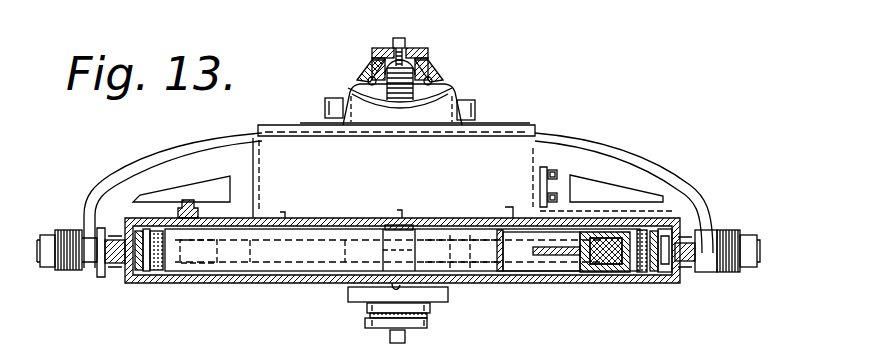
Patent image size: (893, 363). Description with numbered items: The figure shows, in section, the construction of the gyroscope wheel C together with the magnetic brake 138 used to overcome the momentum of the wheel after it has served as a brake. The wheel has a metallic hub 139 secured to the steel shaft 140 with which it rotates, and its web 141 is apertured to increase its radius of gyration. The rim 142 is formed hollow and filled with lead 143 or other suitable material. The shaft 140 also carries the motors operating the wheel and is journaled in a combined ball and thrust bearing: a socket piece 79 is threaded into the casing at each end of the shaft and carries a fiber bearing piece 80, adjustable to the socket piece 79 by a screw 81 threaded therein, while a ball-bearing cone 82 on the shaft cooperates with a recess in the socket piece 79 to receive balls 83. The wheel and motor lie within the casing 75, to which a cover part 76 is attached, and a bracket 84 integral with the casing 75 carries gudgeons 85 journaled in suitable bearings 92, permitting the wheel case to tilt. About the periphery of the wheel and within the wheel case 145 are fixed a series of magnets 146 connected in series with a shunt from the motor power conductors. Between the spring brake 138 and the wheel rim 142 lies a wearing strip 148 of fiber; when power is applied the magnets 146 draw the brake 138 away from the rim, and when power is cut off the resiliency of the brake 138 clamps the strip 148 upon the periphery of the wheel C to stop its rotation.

The casing 75 is at (280, 127).
The cover part 76 is at (250, 283).
The socket piece 79 is at (430, 52).
The fiber bearing piece 80 is at (374, 62).
The screw 81 is at (415, 34).
The ball-bearing cone 82 is at (362, 82).
The balls 83 is at (440, 81).
The bracket 84 is at (123, 203).
The gudgeons 85 is at (40, 258).
The bearings 92 is at (60, 232).
The magnetic brake 138 is at (150, 275).
The metallic hub 139 is at (432, 240).
The steel shaft 140 is at (390, 110).
The web 141 is at (548, 256).
The rim 142 is at (602, 266).
The lead 143 is at (503, 283).
The wheel case 145 is at (368, 222).
The magnets 146 is at (108, 276).
The wearing strip 148 is at (640, 234).
The gyroscope wheel C is at (233, 180).